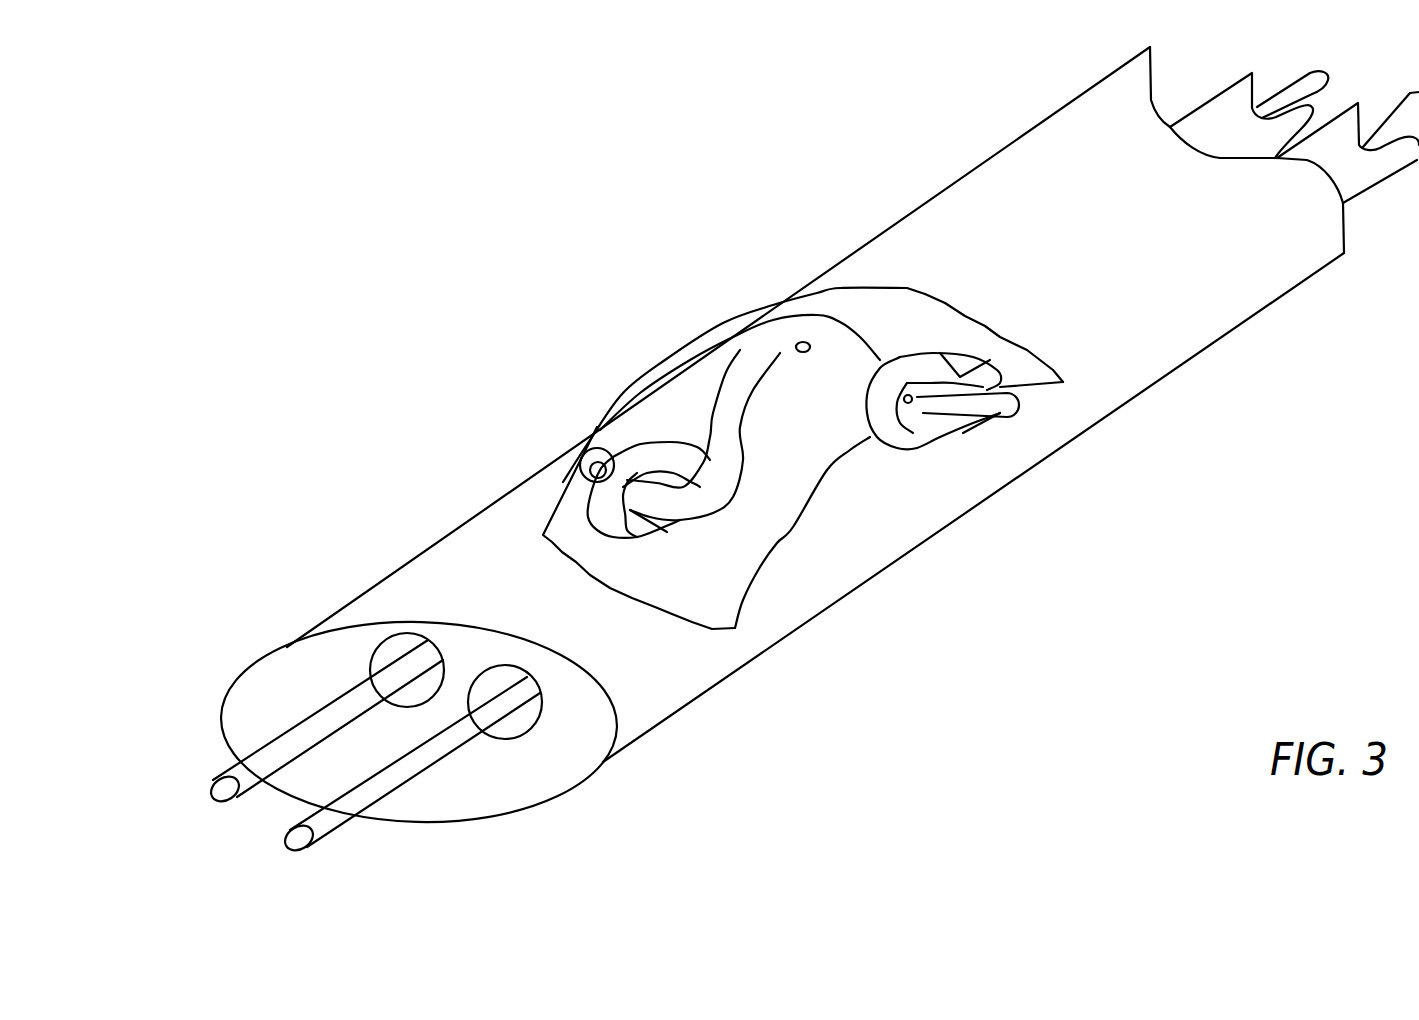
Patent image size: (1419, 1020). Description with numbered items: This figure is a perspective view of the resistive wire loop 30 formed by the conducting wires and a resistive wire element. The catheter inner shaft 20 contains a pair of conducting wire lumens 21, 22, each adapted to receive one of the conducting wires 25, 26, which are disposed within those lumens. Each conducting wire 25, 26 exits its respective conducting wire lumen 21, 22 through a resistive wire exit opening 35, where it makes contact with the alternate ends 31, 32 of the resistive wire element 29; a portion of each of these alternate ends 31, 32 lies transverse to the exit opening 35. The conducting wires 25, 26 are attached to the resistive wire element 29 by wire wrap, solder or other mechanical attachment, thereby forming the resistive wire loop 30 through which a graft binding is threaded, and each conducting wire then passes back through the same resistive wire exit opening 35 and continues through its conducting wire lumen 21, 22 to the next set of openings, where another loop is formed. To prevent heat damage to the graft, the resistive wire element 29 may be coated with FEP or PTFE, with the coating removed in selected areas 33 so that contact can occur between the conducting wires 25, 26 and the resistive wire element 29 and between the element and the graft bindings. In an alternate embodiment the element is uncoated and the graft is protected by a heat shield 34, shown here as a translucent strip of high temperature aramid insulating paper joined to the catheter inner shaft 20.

The inner shaft 20 is at (322, 585).
The conducting wire lumen 21 is at (368, 668).
The conducting wire lumen 22 is at (542, 714).
The conducting wire 25 is at (209, 776).
The conducting wire 26 is at (346, 845).
The resistive wire element 29 is at (720, 513).
The resistive wire loop 30 is at (789, 318).
The alternate end 31 is at (597, 445).
The alternate end 32 is at (1010, 407).
The selected areas 33 is at (796, 346).
The heat shield 34 is at (668, 348).
The resistive wire exit opening 35 is at (667, 532).